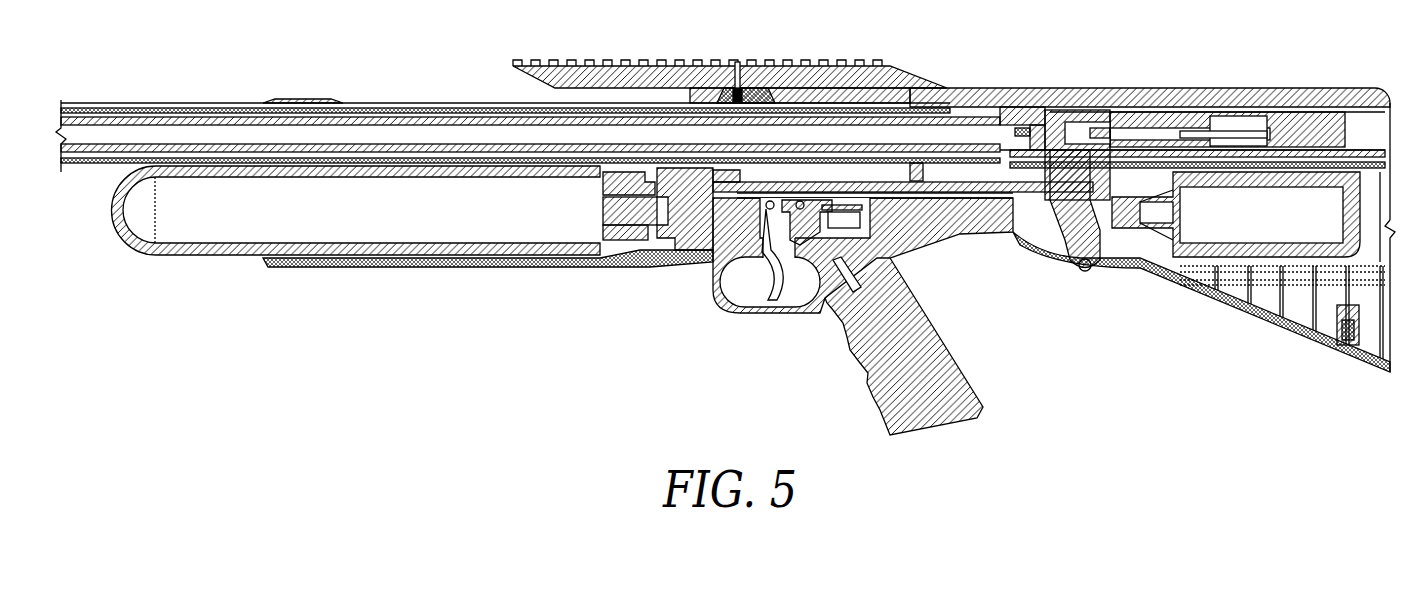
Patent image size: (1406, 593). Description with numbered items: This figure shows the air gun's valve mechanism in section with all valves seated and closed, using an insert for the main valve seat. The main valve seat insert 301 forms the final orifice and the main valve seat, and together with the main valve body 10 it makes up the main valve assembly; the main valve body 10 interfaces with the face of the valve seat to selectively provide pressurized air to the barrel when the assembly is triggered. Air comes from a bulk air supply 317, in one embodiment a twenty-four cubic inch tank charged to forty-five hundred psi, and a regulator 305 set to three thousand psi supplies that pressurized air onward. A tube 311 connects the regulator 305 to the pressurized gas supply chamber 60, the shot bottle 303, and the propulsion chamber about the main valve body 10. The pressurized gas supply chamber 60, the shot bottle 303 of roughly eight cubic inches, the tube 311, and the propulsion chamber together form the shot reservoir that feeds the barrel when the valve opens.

The main valve body 10 is at (1067, 133).
The pressurized gas supply chamber 60 is at (1040, 232).
The main valve seat insert 301 is at (1042, 133).
The shot bottle 303 is at (1193, 228).
The regulator 305 is at (690, 212).
The tube 311 is at (838, 188).
The bulk air supply 317 is at (246, 214).